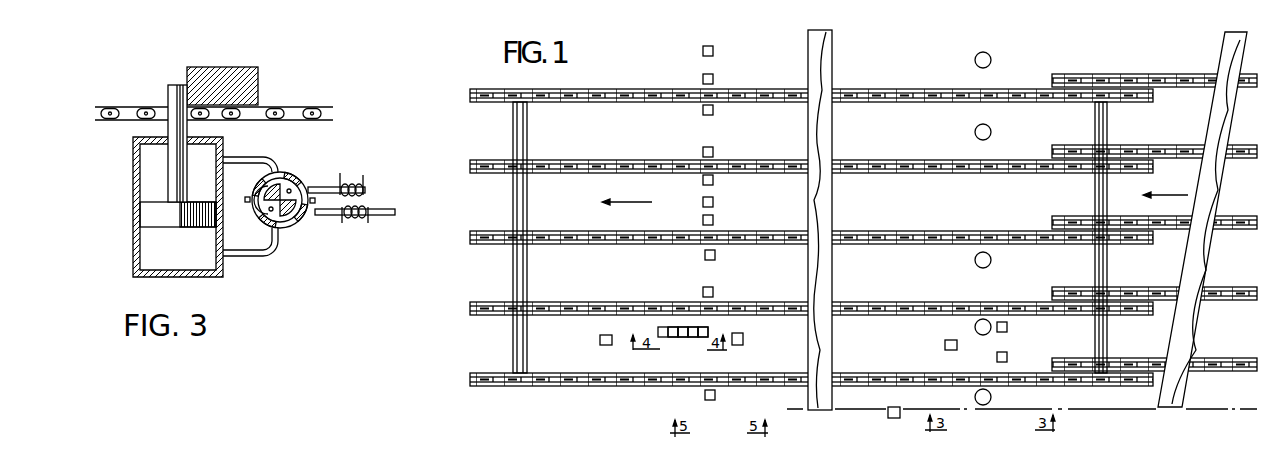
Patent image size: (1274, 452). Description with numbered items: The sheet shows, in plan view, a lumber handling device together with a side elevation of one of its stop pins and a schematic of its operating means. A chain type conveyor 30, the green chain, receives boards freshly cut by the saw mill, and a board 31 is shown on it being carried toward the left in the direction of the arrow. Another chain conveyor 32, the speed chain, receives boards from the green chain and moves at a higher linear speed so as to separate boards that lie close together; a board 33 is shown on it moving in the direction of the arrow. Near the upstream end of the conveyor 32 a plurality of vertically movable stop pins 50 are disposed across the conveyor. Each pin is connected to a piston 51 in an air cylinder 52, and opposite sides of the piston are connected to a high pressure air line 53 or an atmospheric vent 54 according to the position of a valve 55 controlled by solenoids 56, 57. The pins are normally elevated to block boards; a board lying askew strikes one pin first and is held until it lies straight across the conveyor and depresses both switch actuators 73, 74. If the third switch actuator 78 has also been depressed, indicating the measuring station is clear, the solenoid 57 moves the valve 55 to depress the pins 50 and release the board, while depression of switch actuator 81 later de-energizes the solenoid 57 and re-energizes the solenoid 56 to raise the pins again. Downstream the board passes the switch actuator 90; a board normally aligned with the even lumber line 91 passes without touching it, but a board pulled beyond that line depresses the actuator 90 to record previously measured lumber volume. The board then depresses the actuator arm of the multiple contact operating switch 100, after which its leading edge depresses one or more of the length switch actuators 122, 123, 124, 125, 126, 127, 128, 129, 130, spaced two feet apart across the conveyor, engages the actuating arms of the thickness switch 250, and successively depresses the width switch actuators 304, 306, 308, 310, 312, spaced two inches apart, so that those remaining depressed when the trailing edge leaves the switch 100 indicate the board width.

In FIG. 1, the chain type conveyor 30 is at (1223, 358).
In FIG. 1, the board 31 is at (1205, 254).
In FIG. 1, the chain conveyor 32 is at (927, 302).
In FIG. 1, the board 33 is at (827, 207).
In FIG. 3, the stop pins 50 is at (168, 96).
In FIG. 1, the stop pins 50 is at (989, 54).
In FIG. 3, the piston 51 is at (147, 217).
In FIG. 3, the air cylinder 52 is at (137, 250).
In FIG. 3, the high pressure air line 53 is at (245, 198).
In FIG. 3, the atmospheric vent 54 is at (317, 201).
In FIG. 3, the valve 55 is at (283, 228).
In FIG. 3, the solenoid 56 is at (343, 183).
In FIG. 3, the solenoid 57 is at (357, 225).
In FIG. 1, the switch actuator 73 is at (1005, 332).
In FIG. 1, the switch actuator 74 is at (1014, 348).
In FIG. 1, the switch actuator 78 is at (597, 332).
In FIG. 1, the switch actuator 81 is at (946, 350).
In FIG. 1, the switch actuator 90 is at (906, 401).
In FIG. 1, the even lumber line 91 is at (1250, 408).
In FIG. 1, the multiple contact operating switch 100 is at (746, 338).
In FIG. 1, the switch actuator 122 is at (713, 288).
In FIG. 1, the switch actuator 123 is at (708, 260).
In FIG. 1, the switch actuator 124 is at (705, 218).
In FIG. 1, the switch actuator 125 is at (703, 200).
In FIG. 1, the switch actuator 126 is at (710, 185).
In FIG. 1, the switch actuator 127 is at (706, 147).
In FIG. 1, the switch actuator 128 is at (710, 115).
In FIG. 1, the switch actuator 129 is at (711, 74).
In FIG. 1, the switch actuator 130 is at (711, 46).
In FIG. 1, the thickness switch 250 is at (710, 400).
In FIG. 1, the width switch actuator 304 is at (702, 329).
In FIG. 1, the width switch actuator 306 is at (692, 329).
In FIG. 1, the width switch actuator 308 is at (682, 329).
In FIG. 1, the width switch actuator 310 is at (672, 329).
In FIG. 1, the width switch actuator 312 is at (661, 329).